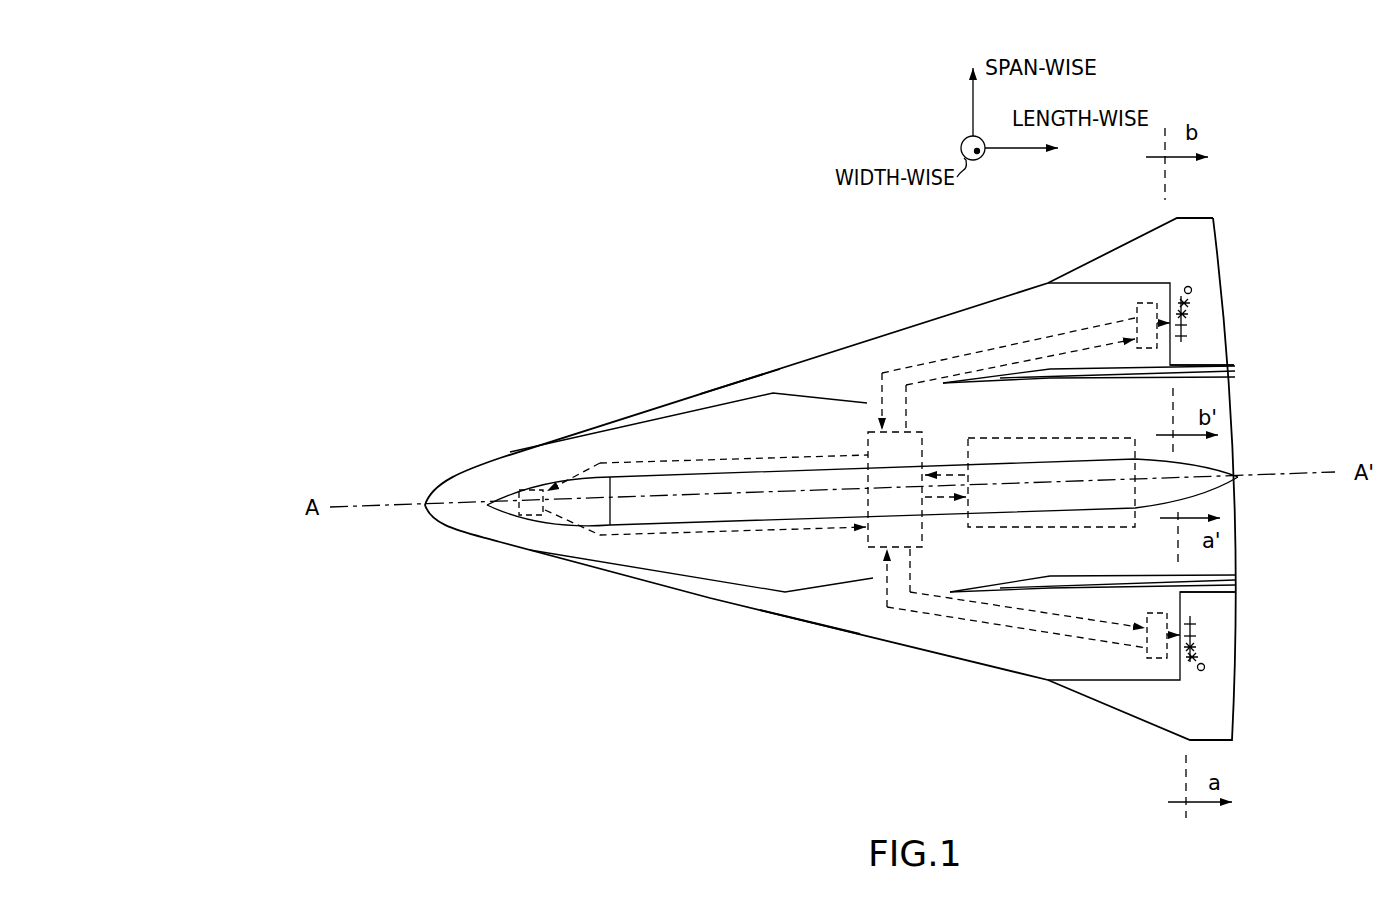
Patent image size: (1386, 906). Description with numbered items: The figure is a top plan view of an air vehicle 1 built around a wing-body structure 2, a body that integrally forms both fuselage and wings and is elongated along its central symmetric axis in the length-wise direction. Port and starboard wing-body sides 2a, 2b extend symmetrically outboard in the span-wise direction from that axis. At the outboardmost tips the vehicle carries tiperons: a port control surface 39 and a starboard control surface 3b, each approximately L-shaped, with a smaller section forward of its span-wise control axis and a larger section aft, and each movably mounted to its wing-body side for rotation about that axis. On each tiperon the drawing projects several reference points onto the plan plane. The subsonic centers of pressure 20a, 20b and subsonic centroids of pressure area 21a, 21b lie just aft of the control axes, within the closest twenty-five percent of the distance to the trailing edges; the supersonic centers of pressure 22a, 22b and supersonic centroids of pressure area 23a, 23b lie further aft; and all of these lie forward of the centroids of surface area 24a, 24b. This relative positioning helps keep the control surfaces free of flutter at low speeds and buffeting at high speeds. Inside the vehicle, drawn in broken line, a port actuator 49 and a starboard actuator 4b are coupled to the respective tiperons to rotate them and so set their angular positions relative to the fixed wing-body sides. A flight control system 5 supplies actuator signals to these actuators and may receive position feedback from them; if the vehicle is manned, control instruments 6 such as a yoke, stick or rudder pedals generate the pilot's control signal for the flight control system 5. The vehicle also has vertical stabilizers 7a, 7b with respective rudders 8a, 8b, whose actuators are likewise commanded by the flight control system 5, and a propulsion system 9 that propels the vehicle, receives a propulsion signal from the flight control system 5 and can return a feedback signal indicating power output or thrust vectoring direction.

The air vehicle 1 is at (750, 277).
The wing-body structure 2 is at (548, 298).
The port wing-body side 2a is at (883, 655).
The starboard wing-body side 2b is at (857, 323).
The control surface 3b is at (1205, 207).
The control surface 39 is at (1213, 750).
The actuator 4b is at (1135, 310).
The actuator 49 is at (1145, 658).
The flight control system 5 is at (868, 530).
The control instruments 6 is at (523, 490).
The vertical stabilizer 7a is at (1033, 577).
The vertical stabilizer 7b is at (1045, 390).
The rudder 8a is at (1222, 575).
The rudder 8b is at (1215, 385).
The propulsion system 9 is at (1075, 535).
The subsonic center of pressure 20a is at (1238, 583).
The subsonic center of pressure 20b is at (1196, 338).
The subsonic centroid of pressure area 21a is at (1204, 622).
The subsonic centroid of pressure area 21b is at (1197, 322).
The supersonic center of pressure 22a is at (1206, 637).
The supersonic center of pressure 22b is at (1197, 313).
The supersonic centroid of pressure area 23a is at (1208, 650).
The supersonic centroid of pressure area 23b is at (1199, 298).
The centroid of surface area 24a is at (1208, 663).
The centroid of surface area 24b is at (1200, 287).